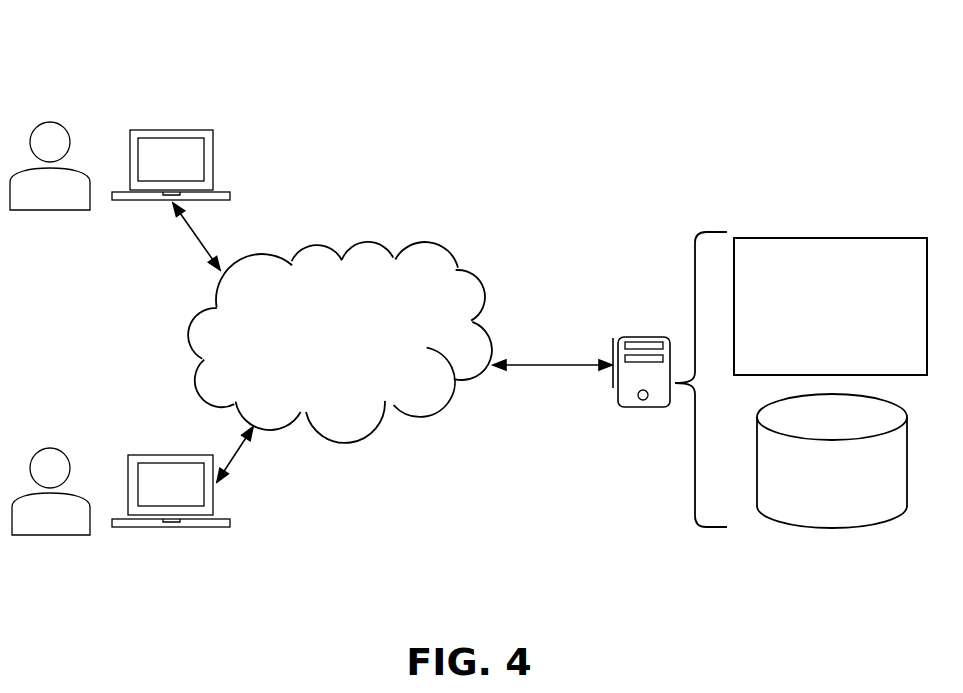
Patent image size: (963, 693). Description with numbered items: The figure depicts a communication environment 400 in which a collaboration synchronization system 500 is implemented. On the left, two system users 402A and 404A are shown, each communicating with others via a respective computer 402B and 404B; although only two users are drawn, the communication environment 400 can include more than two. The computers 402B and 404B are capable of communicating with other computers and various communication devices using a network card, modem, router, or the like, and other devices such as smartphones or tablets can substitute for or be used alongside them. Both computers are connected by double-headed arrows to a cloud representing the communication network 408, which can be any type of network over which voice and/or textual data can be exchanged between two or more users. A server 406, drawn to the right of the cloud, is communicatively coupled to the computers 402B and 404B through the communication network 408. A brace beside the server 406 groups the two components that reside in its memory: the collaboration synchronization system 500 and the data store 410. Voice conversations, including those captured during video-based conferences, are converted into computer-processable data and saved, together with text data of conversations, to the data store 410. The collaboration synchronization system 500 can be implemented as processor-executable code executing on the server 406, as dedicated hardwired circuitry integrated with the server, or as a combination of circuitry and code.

The communication environment 400 is at (800, 72).
The system user 402A is at (50, 210).
The computer 402B is at (213, 160).
The system user 404A is at (50, 535).
The computer 404B is at (172, 527).
The server 406 is at (643, 407).
The communication network 408 is at (487, 288).
The data store 410 is at (832, 527).
The collaboration synchronization system 500 is at (832, 238).